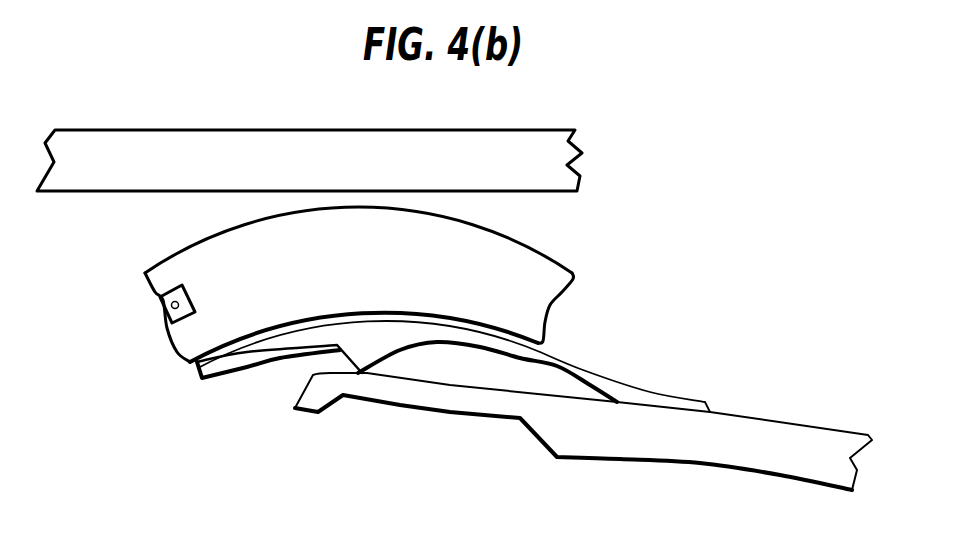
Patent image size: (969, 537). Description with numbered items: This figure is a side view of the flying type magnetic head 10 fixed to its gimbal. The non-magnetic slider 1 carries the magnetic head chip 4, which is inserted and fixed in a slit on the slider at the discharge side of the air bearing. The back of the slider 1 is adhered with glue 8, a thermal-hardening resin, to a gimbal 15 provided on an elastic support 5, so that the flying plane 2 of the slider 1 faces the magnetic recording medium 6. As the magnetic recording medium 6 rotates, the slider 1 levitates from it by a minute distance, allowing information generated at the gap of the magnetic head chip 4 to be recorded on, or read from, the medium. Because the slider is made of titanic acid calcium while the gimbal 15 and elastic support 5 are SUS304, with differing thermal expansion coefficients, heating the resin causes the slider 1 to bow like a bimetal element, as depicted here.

The magnetic recording medium 6 is at (480, 152).
The flying type magnetic head 10 is at (556, 239).
The flying plane 2 is at (210, 238).
The slider 1 is at (537, 293).
The magnetic head chip 4 is at (165, 300).
The glue 8 is at (213, 351).
The gimbal 15 is at (558, 368).
The elastic support 5 is at (622, 438).